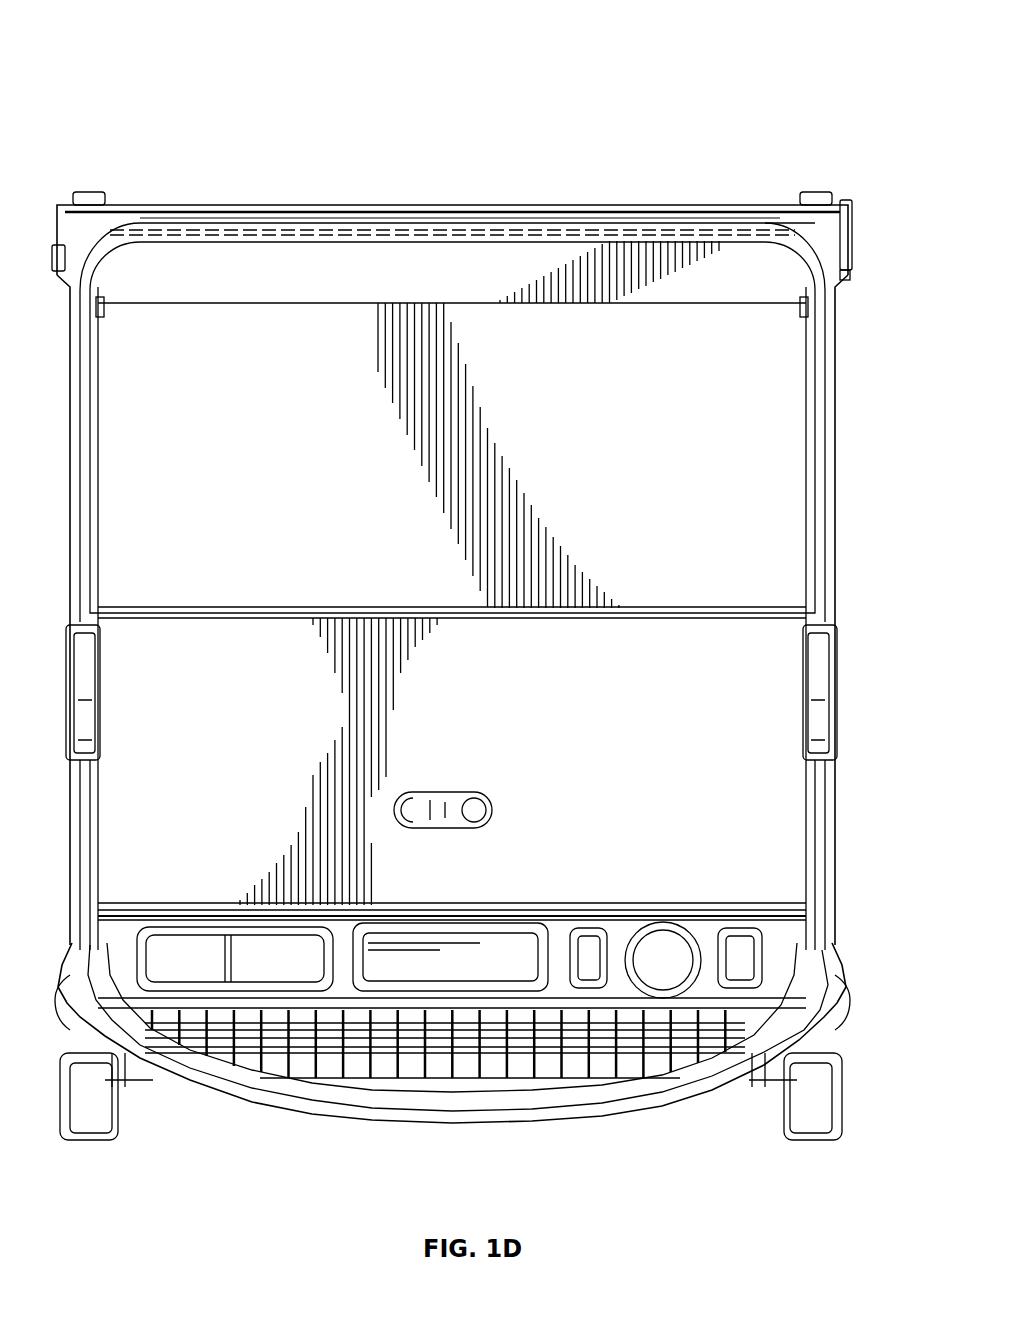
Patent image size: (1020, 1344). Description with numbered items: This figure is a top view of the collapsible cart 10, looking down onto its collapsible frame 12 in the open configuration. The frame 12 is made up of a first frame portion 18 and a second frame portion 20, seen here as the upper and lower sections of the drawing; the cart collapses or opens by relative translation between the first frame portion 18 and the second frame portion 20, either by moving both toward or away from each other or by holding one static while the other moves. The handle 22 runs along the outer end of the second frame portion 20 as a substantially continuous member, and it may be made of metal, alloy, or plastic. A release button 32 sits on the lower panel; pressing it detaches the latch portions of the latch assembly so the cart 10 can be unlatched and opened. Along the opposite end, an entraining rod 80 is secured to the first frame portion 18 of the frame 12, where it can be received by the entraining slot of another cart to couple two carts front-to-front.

The collapsible cart 10 is at (126, 50).
The collapsible frame 12 is at (60, 513).
The first frame portion 18 is at (857, 198).
The second frame portion 20 is at (857, 625).
The handle 22 is at (650, 1110).
The release button 32 is at (496, 812).
The entraining rod 80 is at (444, 204).